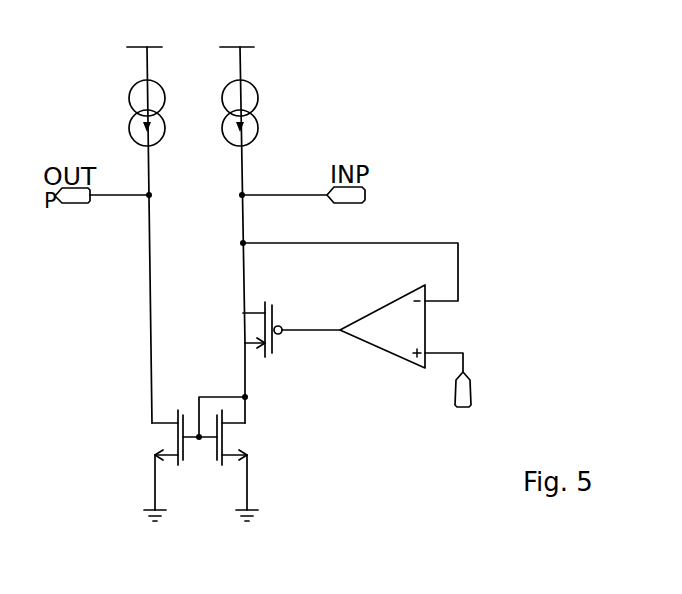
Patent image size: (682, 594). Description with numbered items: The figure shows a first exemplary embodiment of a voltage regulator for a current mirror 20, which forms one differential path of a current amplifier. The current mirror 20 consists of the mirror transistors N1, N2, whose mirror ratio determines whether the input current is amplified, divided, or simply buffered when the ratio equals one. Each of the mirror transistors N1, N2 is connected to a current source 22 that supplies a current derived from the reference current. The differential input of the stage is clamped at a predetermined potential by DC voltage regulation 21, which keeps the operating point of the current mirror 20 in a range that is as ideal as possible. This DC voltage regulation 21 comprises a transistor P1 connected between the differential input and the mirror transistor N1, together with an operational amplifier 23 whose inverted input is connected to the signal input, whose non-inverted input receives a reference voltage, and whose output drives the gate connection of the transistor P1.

The current mirror 20 is at (168, 446).
The DC voltage regulation 21 is at (472, 307).
The current source 22 is at (215, 108).
The operational amplifier 23 is at (377, 337).
The transistor P1 is at (291, 328).
The mirror transistor N1 is at (254, 465).
The mirror transistor N2 is at (154, 465).